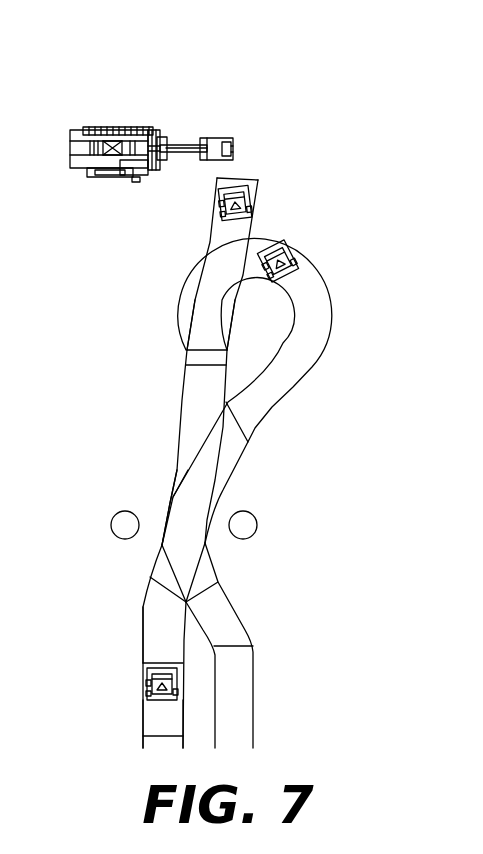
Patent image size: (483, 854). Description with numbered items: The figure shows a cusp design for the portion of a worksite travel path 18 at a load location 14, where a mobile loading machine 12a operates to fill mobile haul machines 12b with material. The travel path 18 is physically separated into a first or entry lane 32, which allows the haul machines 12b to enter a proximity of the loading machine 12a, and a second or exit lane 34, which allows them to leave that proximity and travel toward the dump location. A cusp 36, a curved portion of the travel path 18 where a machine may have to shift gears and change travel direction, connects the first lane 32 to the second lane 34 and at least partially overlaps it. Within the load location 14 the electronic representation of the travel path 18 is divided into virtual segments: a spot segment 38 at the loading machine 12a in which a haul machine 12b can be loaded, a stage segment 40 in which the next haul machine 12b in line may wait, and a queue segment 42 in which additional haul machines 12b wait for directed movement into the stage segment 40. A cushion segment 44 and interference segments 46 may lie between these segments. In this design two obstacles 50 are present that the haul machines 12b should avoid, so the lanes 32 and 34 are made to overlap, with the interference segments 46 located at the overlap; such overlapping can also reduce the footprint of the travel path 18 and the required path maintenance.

The mobile loading machine 12a is at (69, 131).
The mobile haul machines 12b is at (248, 198).
The load location 14 is at (268, 337).
The travel path 18 is at (104, 572).
The first lane 32 is at (232, 602).
The second lane 34 is at (146, 604).
The cusp 36 is at (146, 341).
The spot segment 38 is at (212, 302).
The stage segment 40 is at (318, 339).
The queue segment 42 is at (162, 708).
The cushion segment 44 is at (150, 636).
The interference segments 46 is at (182, 512).
The obstacles 50 is at (112, 518).